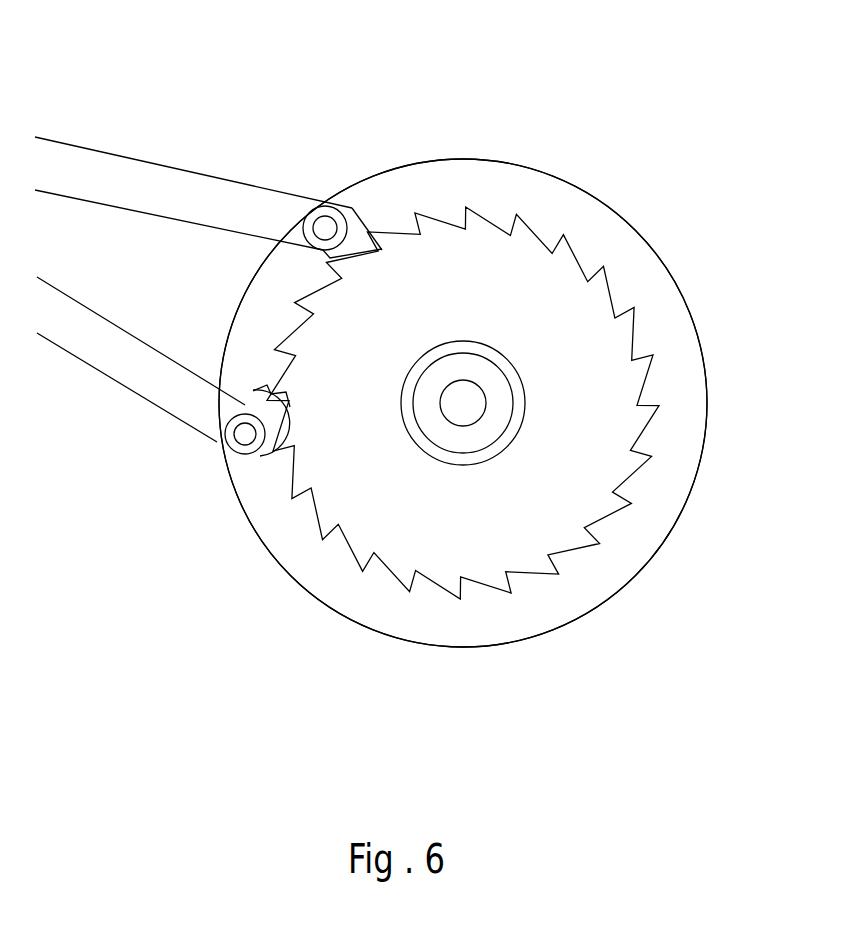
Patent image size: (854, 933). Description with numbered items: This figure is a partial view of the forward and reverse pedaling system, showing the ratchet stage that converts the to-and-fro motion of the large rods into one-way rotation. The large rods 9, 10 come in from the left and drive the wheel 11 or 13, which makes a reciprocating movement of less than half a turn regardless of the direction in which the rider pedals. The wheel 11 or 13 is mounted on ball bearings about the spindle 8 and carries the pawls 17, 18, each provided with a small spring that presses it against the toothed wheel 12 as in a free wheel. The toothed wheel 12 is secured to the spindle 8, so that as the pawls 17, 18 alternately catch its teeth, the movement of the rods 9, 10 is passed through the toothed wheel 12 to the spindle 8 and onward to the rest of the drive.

The spindle 8 is at (455, 409).
The rod 9 is at (145, 203).
The rod 10 is at (140, 372).
The wheel 11 is at (598, 218).
The wheel 13 is at (463, 403).
The toothed wheel 12 is at (505, 542).
The pawl 17 is at (335, 232).
The pawl 18 is at (224, 450).